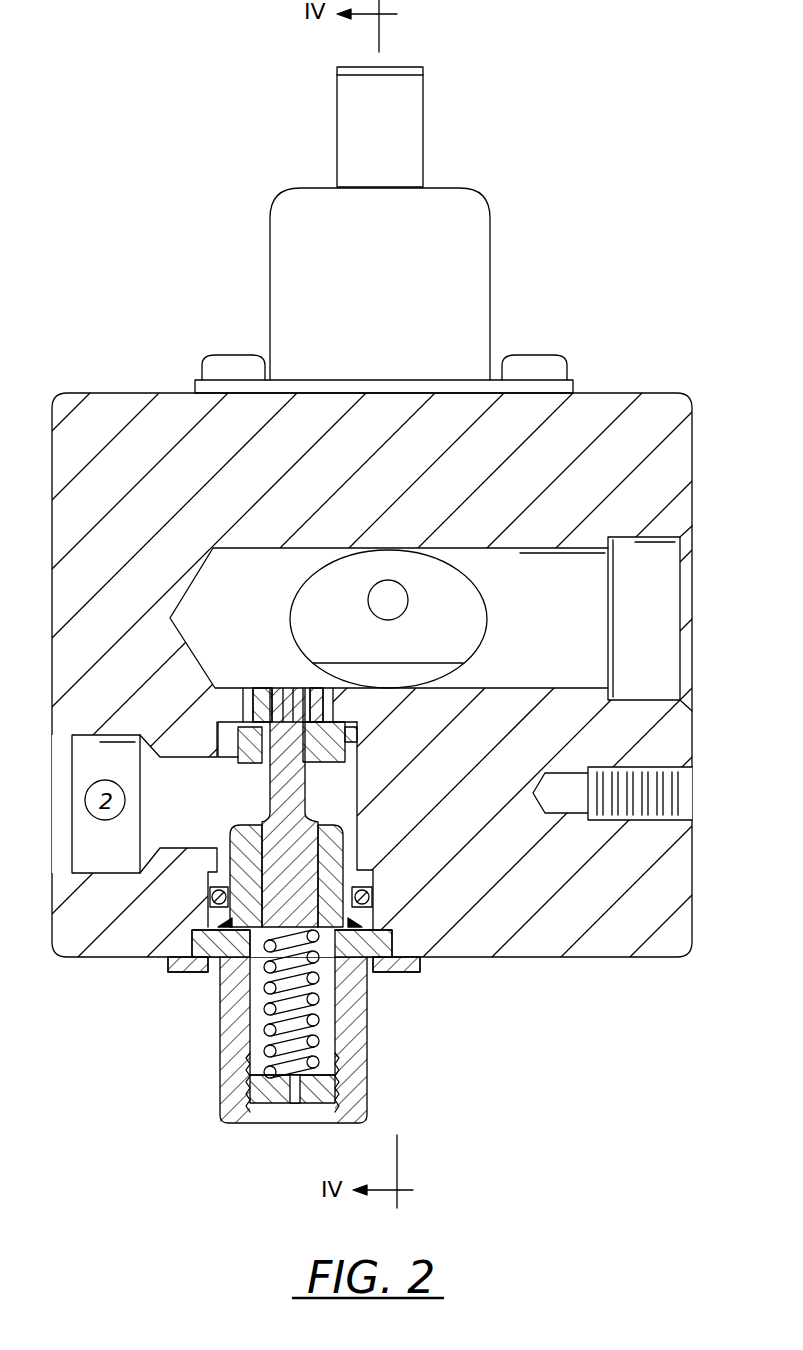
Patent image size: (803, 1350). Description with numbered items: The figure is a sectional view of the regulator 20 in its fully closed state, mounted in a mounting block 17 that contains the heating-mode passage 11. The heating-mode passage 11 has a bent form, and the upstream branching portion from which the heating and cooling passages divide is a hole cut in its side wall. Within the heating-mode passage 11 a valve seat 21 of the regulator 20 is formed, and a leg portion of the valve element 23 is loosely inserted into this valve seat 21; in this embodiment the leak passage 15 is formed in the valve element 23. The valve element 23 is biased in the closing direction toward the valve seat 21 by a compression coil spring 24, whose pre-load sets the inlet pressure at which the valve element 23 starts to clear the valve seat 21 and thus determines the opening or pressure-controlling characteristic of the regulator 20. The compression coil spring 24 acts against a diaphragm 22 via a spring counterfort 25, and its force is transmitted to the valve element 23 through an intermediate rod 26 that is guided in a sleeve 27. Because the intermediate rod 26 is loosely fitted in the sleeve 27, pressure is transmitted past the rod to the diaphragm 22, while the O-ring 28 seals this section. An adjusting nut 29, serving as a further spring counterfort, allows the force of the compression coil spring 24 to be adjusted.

The heating-mode passage 11 is at (282, 553).
The leak passage 15 is at (260, 758).
The mounting block 17 is at (112, 407).
The regulator 20 is at (186, 1026).
The valve seat 21 is at (247, 700).
The diaphragm 22 is at (350, 950).
The valve element 23 is at (345, 750).
The compression coil spring 24 is at (262, 1038).
The spring counterfort 25 is at (242, 958).
The intermediate rod 26 is at (305, 820).
The sleeve 27 is at (340, 855).
The O-ring 28 is at (370, 893).
The adjusting nut 29 is at (273, 1097).